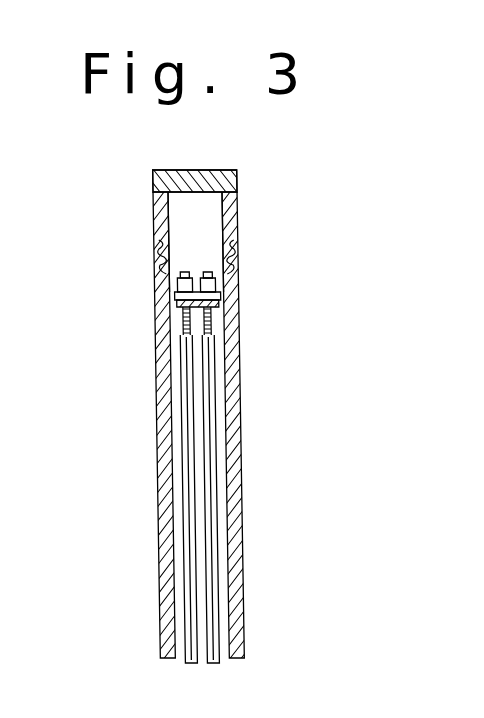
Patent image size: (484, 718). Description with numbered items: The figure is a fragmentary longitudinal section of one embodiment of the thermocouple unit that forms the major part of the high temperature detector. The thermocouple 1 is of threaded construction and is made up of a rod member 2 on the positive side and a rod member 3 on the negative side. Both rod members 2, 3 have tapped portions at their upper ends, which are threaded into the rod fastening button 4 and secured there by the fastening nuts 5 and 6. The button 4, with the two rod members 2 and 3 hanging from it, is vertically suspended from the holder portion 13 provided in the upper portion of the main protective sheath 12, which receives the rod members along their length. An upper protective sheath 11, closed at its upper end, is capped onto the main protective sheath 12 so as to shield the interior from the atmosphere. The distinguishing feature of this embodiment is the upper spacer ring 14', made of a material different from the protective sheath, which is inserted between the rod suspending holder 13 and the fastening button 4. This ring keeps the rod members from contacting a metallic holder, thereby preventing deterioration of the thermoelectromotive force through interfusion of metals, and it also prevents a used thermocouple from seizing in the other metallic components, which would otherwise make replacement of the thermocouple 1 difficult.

The thermocouple 1 is at (192, 250).
The rod member on the positive side 2 is at (167, 243).
The rod member on the negative side 3 is at (208, 250).
The rod fastening button 4 is at (175, 300).
The fastening nut 5 is at (172, 276).
The fastening nut 6 is at (222, 283).
The upper protective sheath 11 is at (193, 178).
The protective sheath 12 is at (228, 432).
The holder portion 13 is at (223, 327).
The upper spacer ring 14' is at (249, 312).